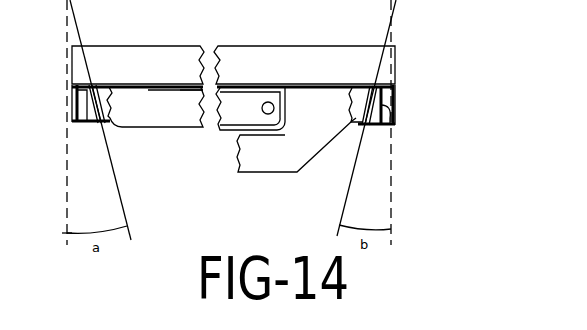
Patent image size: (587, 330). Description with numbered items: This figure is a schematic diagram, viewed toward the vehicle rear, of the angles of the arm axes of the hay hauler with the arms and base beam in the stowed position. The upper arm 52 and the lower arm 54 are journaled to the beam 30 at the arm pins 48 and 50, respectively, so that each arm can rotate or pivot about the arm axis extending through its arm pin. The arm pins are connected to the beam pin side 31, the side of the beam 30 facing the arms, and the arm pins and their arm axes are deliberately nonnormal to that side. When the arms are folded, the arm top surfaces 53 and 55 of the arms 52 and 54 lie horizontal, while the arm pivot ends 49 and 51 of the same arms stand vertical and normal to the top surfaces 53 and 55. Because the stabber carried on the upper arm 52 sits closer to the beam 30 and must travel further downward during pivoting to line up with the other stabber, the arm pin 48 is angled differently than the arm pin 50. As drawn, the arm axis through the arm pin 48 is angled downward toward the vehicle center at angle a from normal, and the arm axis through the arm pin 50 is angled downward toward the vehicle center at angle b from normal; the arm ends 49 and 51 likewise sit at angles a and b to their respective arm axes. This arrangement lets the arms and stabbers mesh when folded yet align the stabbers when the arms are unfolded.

The beam 30 is at (190, 50).
The beam pin side 31 is at (195, 97).
The arm pin 48 is at (95, 84).
The arm pivot end 49 is at (72, 100).
The arm pin 50 is at (370, 86).
The arm pivot end 51 is at (385, 127).
The upper arm 52 is at (153, 124).
The arm top surface 53 is at (148, 88).
The lower arm 54 is at (306, 143).
The arm top surface 55 is at (330, 87).